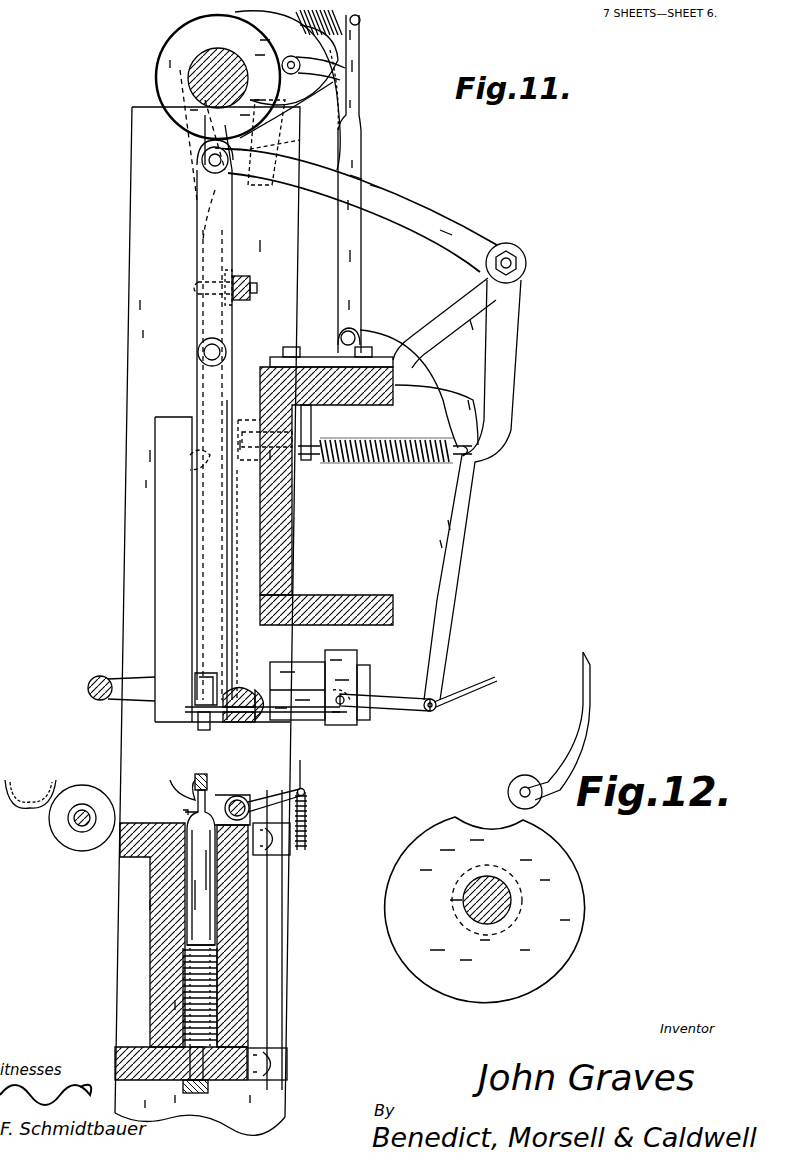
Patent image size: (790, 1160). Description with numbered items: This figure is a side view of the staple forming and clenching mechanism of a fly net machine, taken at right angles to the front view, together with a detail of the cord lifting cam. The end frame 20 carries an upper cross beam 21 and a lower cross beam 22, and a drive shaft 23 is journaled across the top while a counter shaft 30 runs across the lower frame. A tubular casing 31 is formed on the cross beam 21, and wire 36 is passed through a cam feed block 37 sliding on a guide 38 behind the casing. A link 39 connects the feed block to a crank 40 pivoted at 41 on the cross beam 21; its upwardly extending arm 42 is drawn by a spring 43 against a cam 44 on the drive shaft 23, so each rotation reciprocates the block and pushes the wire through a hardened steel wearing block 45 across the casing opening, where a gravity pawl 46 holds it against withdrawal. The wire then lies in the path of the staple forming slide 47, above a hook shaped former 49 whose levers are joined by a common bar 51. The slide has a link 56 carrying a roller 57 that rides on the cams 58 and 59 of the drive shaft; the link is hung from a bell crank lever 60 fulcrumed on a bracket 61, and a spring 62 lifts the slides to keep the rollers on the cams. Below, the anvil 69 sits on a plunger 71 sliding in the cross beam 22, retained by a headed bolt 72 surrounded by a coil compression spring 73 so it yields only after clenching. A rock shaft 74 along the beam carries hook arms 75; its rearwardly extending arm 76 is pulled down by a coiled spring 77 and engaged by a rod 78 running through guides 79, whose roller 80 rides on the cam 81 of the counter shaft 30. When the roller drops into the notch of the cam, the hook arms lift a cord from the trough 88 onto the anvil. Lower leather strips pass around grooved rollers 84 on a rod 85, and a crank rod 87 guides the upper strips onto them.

In FIG. 11, the end frame 20 is at (140, 337).
In FIG. 11, the cross beam 21 is at (366, 598).
In FIG. 11, the cross beam 22 is at (150, 985).
In FIG. 11, the drive shaft 23 is at (212, 58).
In FIG. 12, the counter shaft 30 is at (508, 892).
In FIG. 11, the tubular casing 31 is at (250, 545).
In FIG. 11, the wire 36 is at (478, 690).
In FIG. 11, the cam feed block 37 is at (350, 662).
In FIG. 11, the guide 38 is at (302, 670).
In FIG. 11, the link 39 is at (402, 698).
In FIG. 11, the crank 40 is at (472, 490).
In FIG. 11, the pivot 41 is at (340, 336).
In FIG. 11, the upwardly extending arm 42 is at (370, 184).
In FIG. 11, the spring 43 is at (362, 30).
In FIG. 11, the cam 44 is at (265, 150).
In FIG. 11, the hardened steel wearing block 45 is at (245, 722).
In FIG. 11, the gravity pawl 46 is at (264, 720).
In FIG. 11, the staple forming slide 47 is at (200, 385).
In FIG. 11, the hook shaped former 49 is at (200, 722).
In FIG. 11, the common bar 51 is at (250, 280).
In FIG. 11, the link 56 is at (210, 238).
In FIG. 11, the roller 57 is at (200, 160).
In FIG. 11, the cam 58 is at (320, 75).
In FIG. 11, the cam 59 is at (305, 105).
In FIG. 11, the bell crank lever 60 is at (462, 222).
In FIG. 11, the bracket 61 is at (458, 310).
In FIG. 11, the spring 62 is at (398, 462).
In FIG. 11, the anvil 69 is at (238, 796).
In FIG. 11, the plunger 71 is at (190, 905).
In FIG. 11, the headed bolt 72 is at (208, 1085).
In FIG. 11, the coil compression spring 73 is at (160, 960).
In FIG. 11, the rock shaft 74 is at (262, 800).
In FIG. 11, the hook arm 75 is at (172, 788).
In FIG. 11, the rearwardly extending arm 76 is at (302, 790).
In FIG. 11, the coiled spring 77 is at (306, 820).
In FIG. 11, the rod 78 is at (275, 934).
In FIG. 12, the rod 78 is at (588, 703).
In FIG. 11, the guide 79 is at (290, 850).
In FIG. 12, the roller 80 is at (518, 785).
In FIG. 12, the cam 81 is at (435, 825).
In FIG. 11, the grooved roller 84 is at (75, 840).
In FIG. 11, the rod 85 is at (82, 808).
In FIG. 11, the crank rod 87 is at (100, 678).
In FIG. 11, the trough 88 is at (25, 800).